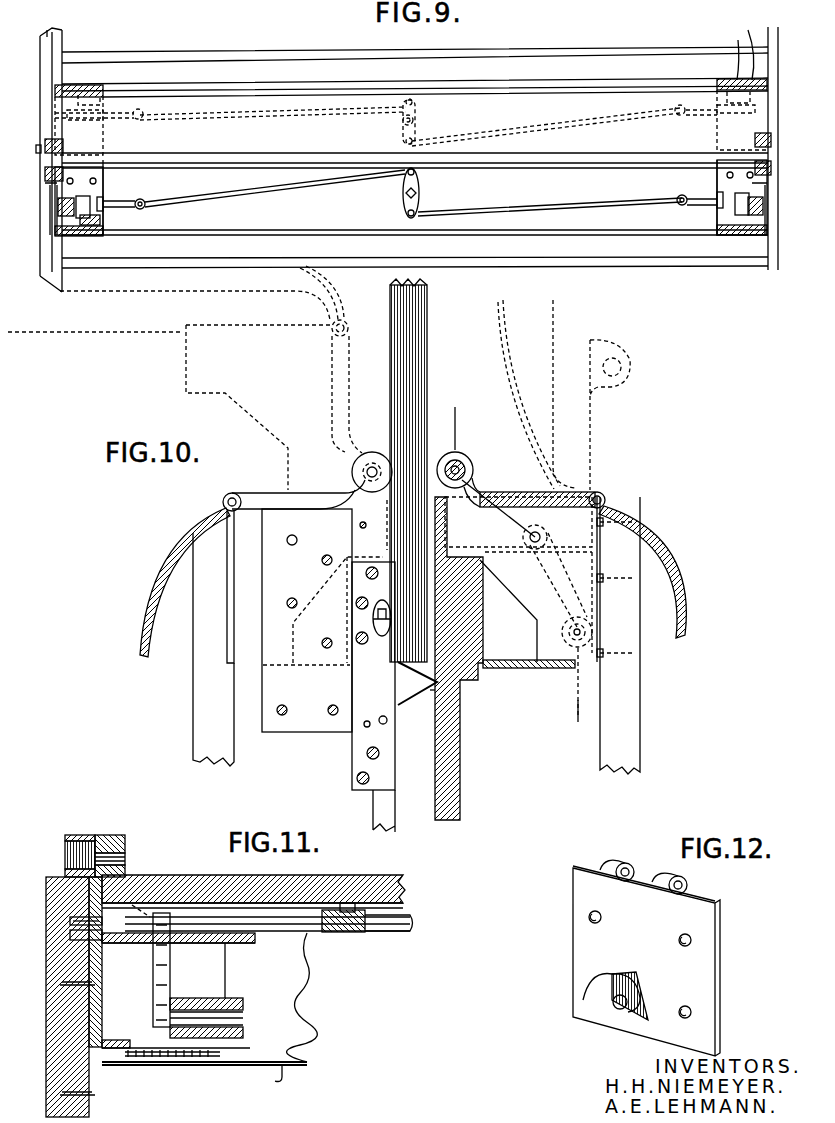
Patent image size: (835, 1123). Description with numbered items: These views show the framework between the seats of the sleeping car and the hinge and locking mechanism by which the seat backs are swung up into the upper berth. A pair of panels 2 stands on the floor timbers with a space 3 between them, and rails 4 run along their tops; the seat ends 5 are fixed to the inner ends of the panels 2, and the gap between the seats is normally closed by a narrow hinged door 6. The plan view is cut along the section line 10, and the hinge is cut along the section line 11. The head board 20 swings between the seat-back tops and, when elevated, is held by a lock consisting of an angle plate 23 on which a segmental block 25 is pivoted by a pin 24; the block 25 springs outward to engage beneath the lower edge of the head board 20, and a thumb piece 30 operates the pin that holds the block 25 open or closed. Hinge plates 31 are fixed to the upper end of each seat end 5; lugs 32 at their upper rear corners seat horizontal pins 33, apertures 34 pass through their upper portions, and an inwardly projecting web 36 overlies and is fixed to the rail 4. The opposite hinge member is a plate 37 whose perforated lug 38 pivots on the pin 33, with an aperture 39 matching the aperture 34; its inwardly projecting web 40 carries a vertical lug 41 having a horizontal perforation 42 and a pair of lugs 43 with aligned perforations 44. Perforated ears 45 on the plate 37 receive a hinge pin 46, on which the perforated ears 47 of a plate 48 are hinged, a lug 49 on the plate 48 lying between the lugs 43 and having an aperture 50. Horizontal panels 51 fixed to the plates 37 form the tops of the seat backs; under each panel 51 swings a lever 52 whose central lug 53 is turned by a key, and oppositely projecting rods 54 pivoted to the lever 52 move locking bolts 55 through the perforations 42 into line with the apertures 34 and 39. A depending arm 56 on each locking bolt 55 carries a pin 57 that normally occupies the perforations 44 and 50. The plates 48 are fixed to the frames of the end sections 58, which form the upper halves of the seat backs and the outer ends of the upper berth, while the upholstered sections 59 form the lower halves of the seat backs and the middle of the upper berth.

In FIG. 10, the panels 2 is at (390, 808).
In FIG. 10, the space 3 is at (424, 720).
In FIG. 10, the rails 4 is at (468, 675).
In FIG. 11, the rails 4 is at (306, 995).
In FIG. 9, the seat ends 5 is at (40, 96).
In FIG. 9, the hinged door 6 is at (36, 150).
In FIG. 9, the section line 10 is at (46, 55).
In FIG. 10, the section line 11 is at (517, 564).
In FIG. 9, the head board 20 is at (575, 158).
In FIG. 10, the head board 20 is at (432, 330).
In FIG. 10, the angle plate 23 is at (360, 748).
In FIG. 10, the pin 24 is at (392, 718).
In FIG. 10, the segmental block 25 is at (417, 683).
In FIG. 10, the thumb piece 30 is at (383, 630).
In FIG. 9, the hinge plates 31 is at (50, 205).
In FIG. 10, the hinge plates 31 is at (308, 712).
In FIG. 11, the hinge plates 31 is at (90, 1078).
In FIG. 9, the lugs 32 is at (46, 142).
In FIG. 10, the lugs 32 is at (374, 463).
In FIG. 11, the lugs 32 is at (78, 834).
In FIG. 10, the pins 33 is at (360, 476).
In FIG. 11, the pins 33 is at (118, 850).
In FIG. 10, the apertures 34 is at (298, 538).
In FIG. 11, the apertures 34 is at (85, 936).
In FIG. 10, the web 36 is at (483, 632).
In FIG. 11, the web 36 is at (160, 1045).
In FIG. 10, the plate 37 is at (248, 652).
In FIG. 11, the plate 37 is at (102, 1012).
In FIG. 9, the perforated lug 38 is at (63, 166).
In FIG. 10, the perforated lug 38 is at (455, 452).
In FIG. 11, the perforated lug 38 is at (112, 834).
In FIG. 10, the aperture 39 is at (540, 528).
In FIG. 11, the aperture 39 is at (70, 918).
In FIG. 9, the web 40 is at (100, 185).
In FIG. 11, the web 40 is at (238, 940).
In FIG. 9, the lug 41 is at (110, 212).
In FIG. 11, the lug 41 is at (235, 912).
In FIG. 11, the perforation 42 is at (285, 900).
In FIG. 11, the lugs 43 is at (178, 1002).
In FIG. 11, the perforations 44 is at (243, 1027).
In FIG. 9, the perforated ears 45 is at (100, 86).
In FIG. 10, the perforated ears 45 is at (228, 494).
In FIG. 10, the hinge pin 46 is at (222, 501).
In FIG. 9, the perforated ears 47 is at (90, 225).
In FIG. 10, the perforated ears 47 is at (610, 415).
In FIG. 12, the perforated ears 47 is at (665, 878).
In FIG. 10, the plate 48 is at (227, 648).
In FIG. 12, the plate 48 is at (700, 975).
In FIG. 10, the lug 49 is at (578, 660).
In FIG. 11, the lug 49 is at (222, 1055).
In FIG. 12, the lug 49 is at (590, 1005).
In FIG. 12, the aperture 50 is at (620, 1010).
In FIG. 9, the panels 51 is at (467, 107).
In FIG. 10, the panels 51 is at (272, 495).
In FIG. 11, the panels 51 is at (375, 883).
In FIG. 9, the lever 52 is at (402, 203).
In FIG. 9, the lug 53 is at (418, 193).
In FIG. 9, the rods 54 is at (303, 183).
In FIG. 11, the rods 54 is at (408, 912).
In FIG. 9, the locking bolt 55 is at (140, 200).
In FIG. 10, the locking bolt 55 is at (530, 536).
In FIG. 11, the locking bolt 55 is at (312, 933).
In FIG. 9, the depending arm 56 is at (60, 220).
In FIG. 10, the depending arm 56 is at (545, 588).
In FIG. 11, the depending arm 56 is at (158, 972).
In FIG. 10, the pin 57 is at (588, 633).
In FIG. 11, the pin 57 is at (238, 1015).
In FIG. 9, the end sections 58 is at (263, 62).
In FIG. 10, the end sections 58 is at (193, 714).
In FIG. 9, the upholstered sections 59 is at (217, 52).